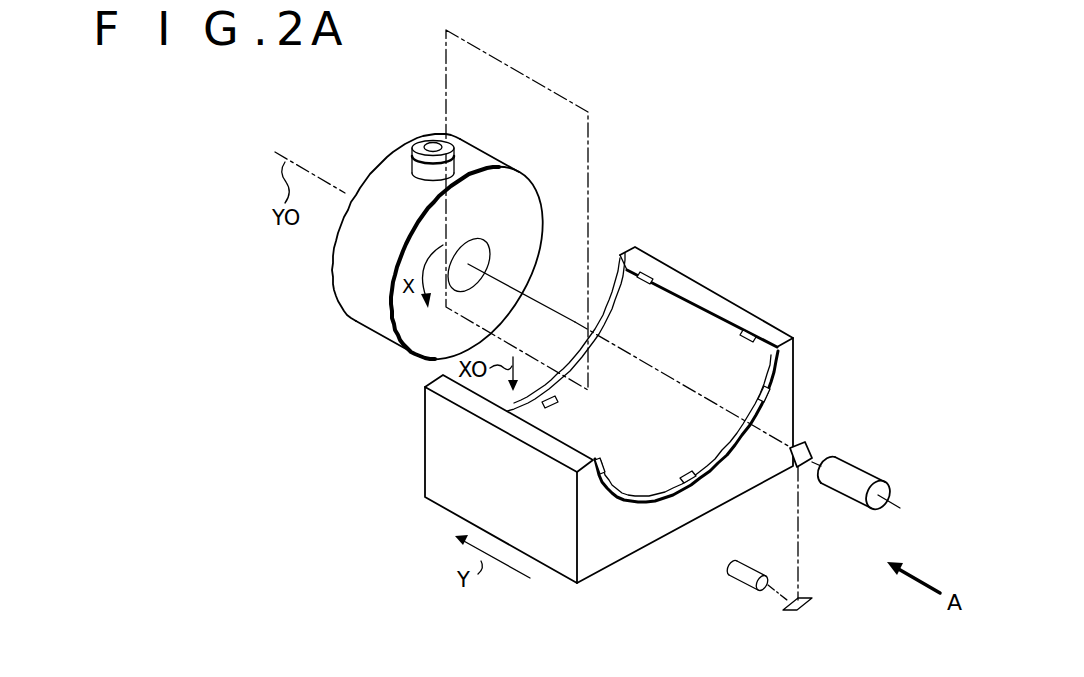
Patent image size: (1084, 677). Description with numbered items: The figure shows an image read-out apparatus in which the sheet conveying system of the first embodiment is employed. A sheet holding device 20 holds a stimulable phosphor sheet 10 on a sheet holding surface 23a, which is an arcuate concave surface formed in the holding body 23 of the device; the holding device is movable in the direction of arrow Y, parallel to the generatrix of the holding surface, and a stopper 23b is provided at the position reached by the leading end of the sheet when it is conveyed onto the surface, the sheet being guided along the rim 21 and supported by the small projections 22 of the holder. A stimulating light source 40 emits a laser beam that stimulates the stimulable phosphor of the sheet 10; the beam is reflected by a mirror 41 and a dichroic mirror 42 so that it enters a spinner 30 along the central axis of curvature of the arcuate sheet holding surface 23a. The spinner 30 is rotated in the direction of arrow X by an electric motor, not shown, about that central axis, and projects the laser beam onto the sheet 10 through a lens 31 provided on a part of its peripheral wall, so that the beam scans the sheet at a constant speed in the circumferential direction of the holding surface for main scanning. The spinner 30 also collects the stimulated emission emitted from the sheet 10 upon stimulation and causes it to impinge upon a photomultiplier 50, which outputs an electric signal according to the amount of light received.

The stimulable phosphor sheet 10 is at (578, 133).
The sheet holding device 20 is at (650, 403).
The holding groove rim 21 is at (612, 466).
The support projection 22 is at (690, 481).
The holder body 23 is at (628, 543).
The sheet holding surface 23a is at (767, 402).
The stopper 23b is at (643, 272).
The spinner 30 is at (335, 311).
The lens 31 is at (428, 143).
The stimulating light source 40 is at (740, 582).
The mirror 41 is at (790, 613).
The dichroic mirror 42 is at (812, 443).
The photomultiplier 50 is at (873, 468).